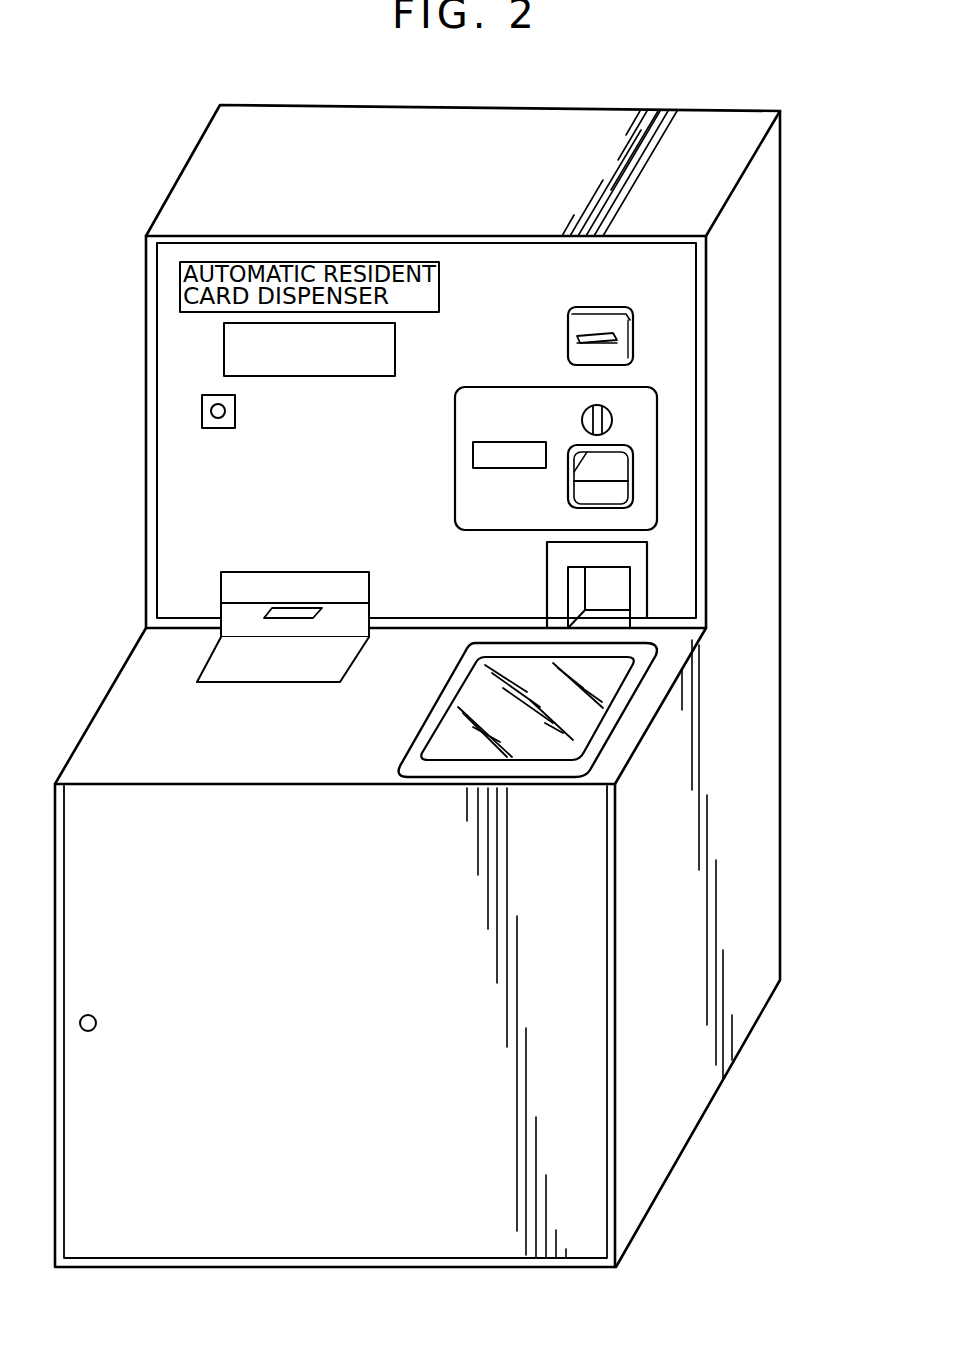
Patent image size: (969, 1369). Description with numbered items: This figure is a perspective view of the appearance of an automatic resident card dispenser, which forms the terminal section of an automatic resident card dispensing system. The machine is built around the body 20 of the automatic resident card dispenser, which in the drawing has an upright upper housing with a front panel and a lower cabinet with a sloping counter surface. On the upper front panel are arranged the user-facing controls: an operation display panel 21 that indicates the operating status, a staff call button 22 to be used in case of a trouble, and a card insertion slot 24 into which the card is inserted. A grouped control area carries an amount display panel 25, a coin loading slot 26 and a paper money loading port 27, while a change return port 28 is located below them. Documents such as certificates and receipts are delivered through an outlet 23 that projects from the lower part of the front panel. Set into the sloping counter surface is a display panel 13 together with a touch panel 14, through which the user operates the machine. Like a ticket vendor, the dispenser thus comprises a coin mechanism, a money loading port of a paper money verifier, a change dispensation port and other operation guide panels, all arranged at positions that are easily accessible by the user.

The body of automatic resident card dispenser 20 is at (780, 186).
The operation display panel 21 is at (395, 349).
The staff call button 22 is at (235, 411).
The outlet of documents 23 is at (262, 572).
The card insertion slot 24 is at (620, 320).
The amount display panel 25 is at (500, 442).
The coin loading slot 26 is at (610, 405).
The paper money loading port 27 is at (568, 487).
The change return port 28 is at (590, 583).
The touch panel 14 is at (445, 683).
The display panel 13 is at (453, 727).